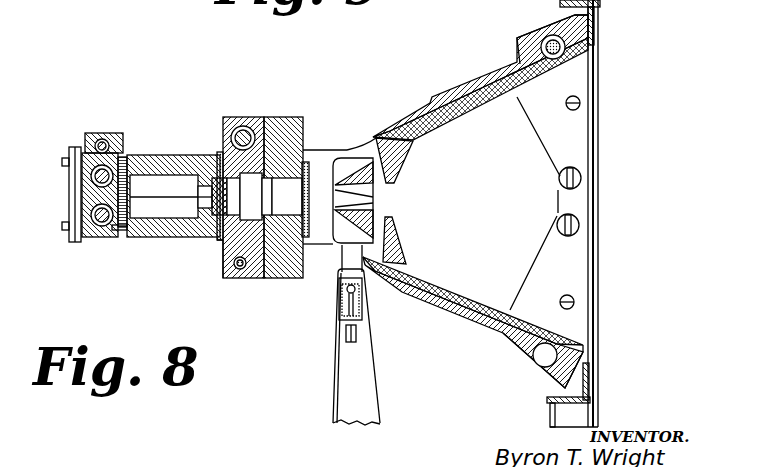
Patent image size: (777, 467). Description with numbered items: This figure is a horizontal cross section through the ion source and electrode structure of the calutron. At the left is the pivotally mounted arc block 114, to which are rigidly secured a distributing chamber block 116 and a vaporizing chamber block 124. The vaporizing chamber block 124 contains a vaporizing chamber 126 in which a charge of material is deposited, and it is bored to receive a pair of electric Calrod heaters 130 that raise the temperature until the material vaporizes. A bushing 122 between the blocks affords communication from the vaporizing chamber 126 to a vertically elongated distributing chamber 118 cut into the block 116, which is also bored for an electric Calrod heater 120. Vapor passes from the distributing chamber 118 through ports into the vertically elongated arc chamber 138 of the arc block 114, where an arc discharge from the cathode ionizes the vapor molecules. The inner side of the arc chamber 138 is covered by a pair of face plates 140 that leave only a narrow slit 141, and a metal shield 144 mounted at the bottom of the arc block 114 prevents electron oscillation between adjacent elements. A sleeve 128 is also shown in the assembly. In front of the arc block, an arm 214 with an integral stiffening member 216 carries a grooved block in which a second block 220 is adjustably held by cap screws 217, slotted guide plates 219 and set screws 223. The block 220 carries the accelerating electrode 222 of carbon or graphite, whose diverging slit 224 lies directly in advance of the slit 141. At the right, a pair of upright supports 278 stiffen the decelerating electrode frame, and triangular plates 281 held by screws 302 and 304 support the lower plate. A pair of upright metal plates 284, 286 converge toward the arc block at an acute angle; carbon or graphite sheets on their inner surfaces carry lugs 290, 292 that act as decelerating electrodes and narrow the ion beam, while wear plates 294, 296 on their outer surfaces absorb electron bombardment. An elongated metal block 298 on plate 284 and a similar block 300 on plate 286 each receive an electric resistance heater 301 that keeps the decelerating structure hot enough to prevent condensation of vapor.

The arc block 114 is at (280, 214).
The distributing chamber block 116 is at (222, 250).
The distributing chamber 118 is at (222, 152).
The electric Calrod heater 120 is at (245, 127).
The bushing 122 is at (212, 176).
The vaporizing chamber block 124 is at (188, 240).
The vaporizing chamber 126 is at (167, 210).
The threaded sleeve 128 is at (124, 232).
The electric Calrod heaters 130 is at (92, 140).
The arc chamber 138 is at (261, 270).
The face plates 140 is at (313, 203).
The slit 141 is at (312, 198).
The shield 144 is at (309, 200).
The arm 214 is at (337, 368).
The stiffening member 216 is at (372, 380).
The cap screws 217 is at (345, 338).
The slotted guide plates 219 is at (342, 308).
The block 220 is at (362, 272).
The accelerating electrode 222 is at (338, 207).
The set screws 223 is at (348, 292).
The diverging slit 224 is at (340, 180).
The upright supports 278 is at (590, 393).
The triangular plates 281 is at (550, 154).
The upright metal plate 284 is at (458, 97).
The upright metal plate 286 is at (432, 302).
The lug 290 is at (405, 158).
The lug 292 is at (408, 235).
The wear plate 294 is at (435, 96).
The wear plate 296 is at (465, 320).
The elongated metal block 298 is at (552, 28).
The block 300 is at (522, 360).
The electric resistance heater 301 is at (591, 43).
The screws 302 is at (581, 178).
The screws 304 is at (580, 103).